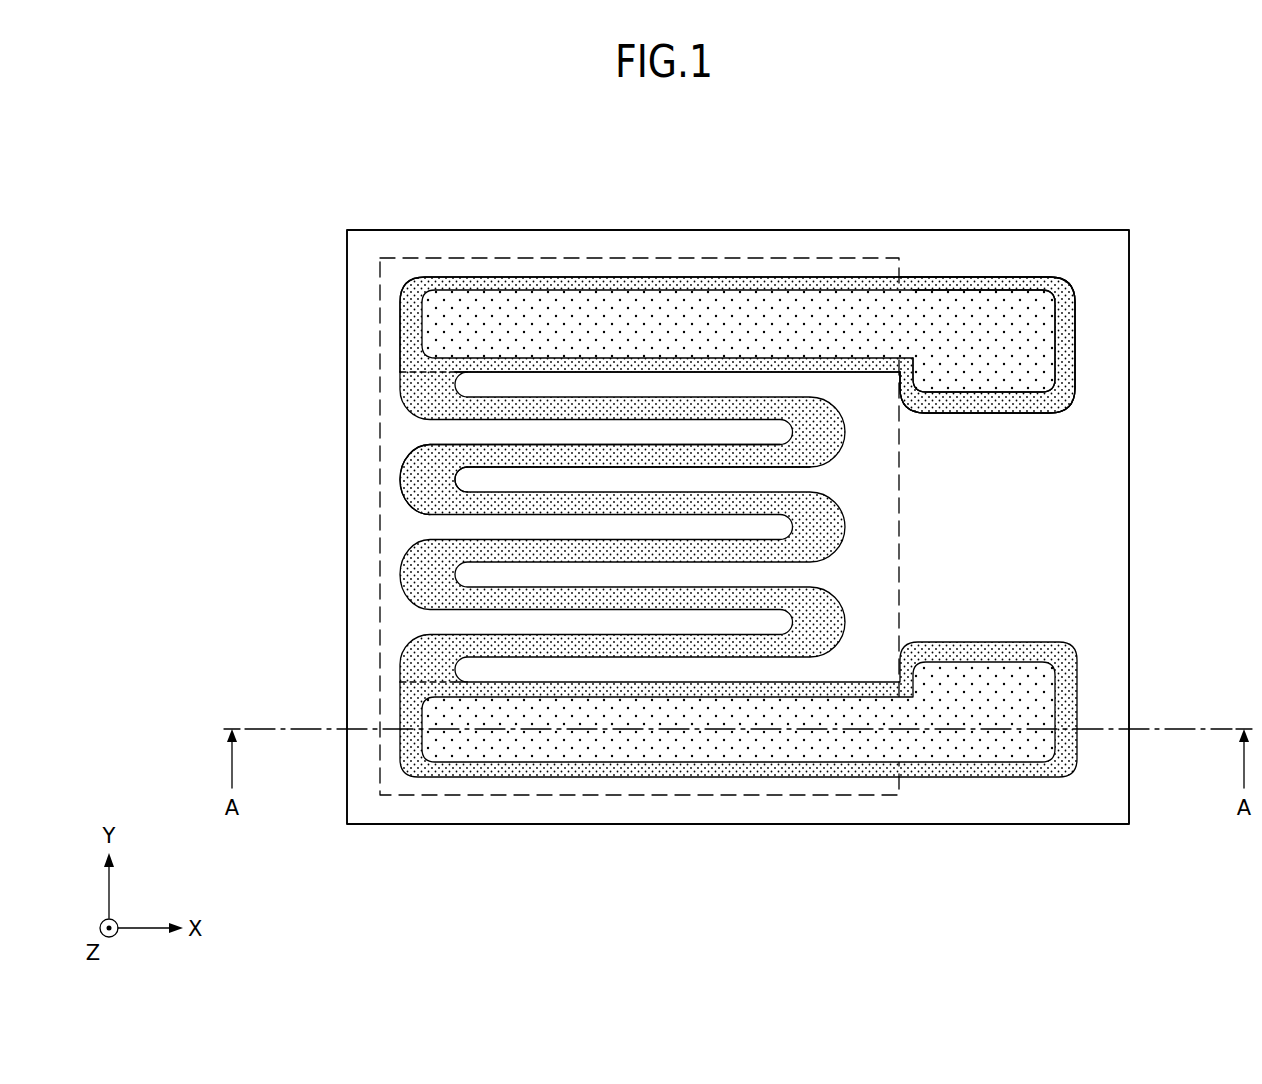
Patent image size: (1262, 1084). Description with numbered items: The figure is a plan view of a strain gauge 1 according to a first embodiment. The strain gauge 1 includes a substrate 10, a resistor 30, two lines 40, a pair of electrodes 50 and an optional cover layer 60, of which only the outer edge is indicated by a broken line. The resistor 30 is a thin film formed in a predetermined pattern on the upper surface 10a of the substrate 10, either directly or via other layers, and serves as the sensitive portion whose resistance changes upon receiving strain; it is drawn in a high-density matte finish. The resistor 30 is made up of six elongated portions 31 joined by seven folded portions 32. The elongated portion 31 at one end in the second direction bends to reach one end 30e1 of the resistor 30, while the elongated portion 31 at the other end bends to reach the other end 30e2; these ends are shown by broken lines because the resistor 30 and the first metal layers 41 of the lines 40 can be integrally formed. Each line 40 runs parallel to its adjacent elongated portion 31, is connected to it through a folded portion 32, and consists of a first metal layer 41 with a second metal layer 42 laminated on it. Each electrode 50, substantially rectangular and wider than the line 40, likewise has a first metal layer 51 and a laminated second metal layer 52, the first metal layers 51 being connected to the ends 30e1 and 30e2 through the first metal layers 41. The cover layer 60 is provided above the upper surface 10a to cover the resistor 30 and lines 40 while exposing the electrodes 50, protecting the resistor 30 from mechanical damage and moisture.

The strain gauge 1 is at (283, 96).
The substrate 10 is at (722, 825).
The upper surface of substrate 10a is at (1100, 258).
The resistor 30 is at (866, 373).
The one end of resistor 30e1 is at (418, 681).
The other end of resistor 30e2 is at (418, 371).
The elongated portion 31 is at (610, 458).
The folded portion 32 is at (420, 486).
The line 40 is at (665, 157).
The first metal layer of line 41 is at (573, 283).
The second metal layer of line 42 is at (641, 310).
The electrode 50 is at (932, 155).
The first metal layer of electrode 51 is at (951, 283).
The second metal layer of electrode 52 is at (1020, 310).
The cover layer 60 is at (745, 257).